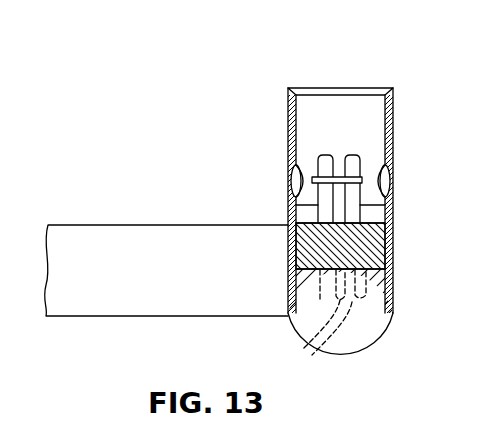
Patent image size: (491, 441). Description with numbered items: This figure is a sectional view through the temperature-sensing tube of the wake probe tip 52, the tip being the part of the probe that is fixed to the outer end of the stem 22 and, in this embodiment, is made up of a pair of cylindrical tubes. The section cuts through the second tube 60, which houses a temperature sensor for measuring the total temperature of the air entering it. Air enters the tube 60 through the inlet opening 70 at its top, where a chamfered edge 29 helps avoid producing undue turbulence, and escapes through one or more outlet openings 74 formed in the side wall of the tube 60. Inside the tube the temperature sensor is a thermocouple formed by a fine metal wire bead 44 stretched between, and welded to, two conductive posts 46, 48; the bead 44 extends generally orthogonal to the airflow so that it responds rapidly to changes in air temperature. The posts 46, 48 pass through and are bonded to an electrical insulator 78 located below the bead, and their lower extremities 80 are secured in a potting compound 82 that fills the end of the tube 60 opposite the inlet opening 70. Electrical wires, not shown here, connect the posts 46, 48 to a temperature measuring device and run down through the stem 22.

The stem 22 is at (120, 250).
The chamfered edge 29 is at (371, 82).
The wire thermocouple bead 44 is at (344, 167).
The conductive post 46 is at (361, 168).
The conductive post 48 is at (318, 170).
The tip 52 is at (266, 83).
The second tube 60 is at (393, 104).
The inlet opening 70 is at (351, 80).
The outlet openings 74 is at (401, 177).
The electrical insulator 78 is at (366, 250).
The lower extremities 80 is at (302, 351).
The potting compound 82 is at (355, 328).